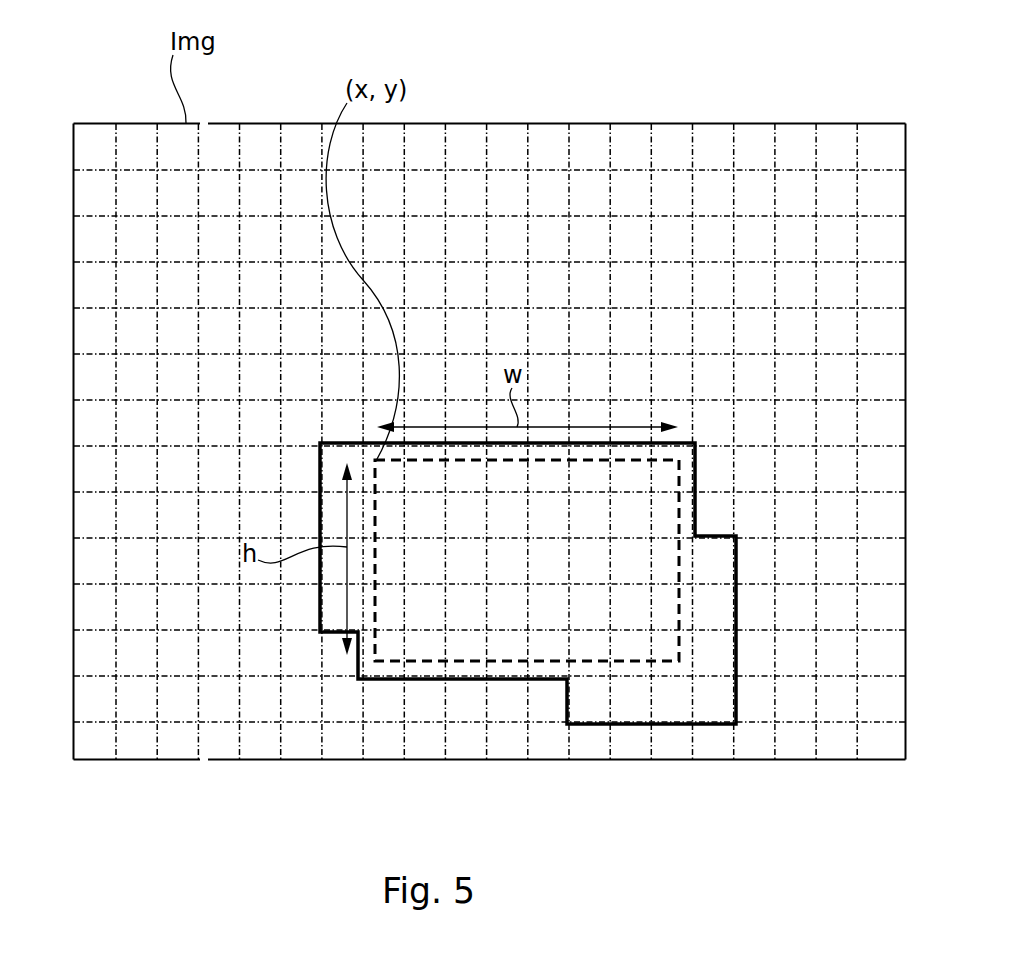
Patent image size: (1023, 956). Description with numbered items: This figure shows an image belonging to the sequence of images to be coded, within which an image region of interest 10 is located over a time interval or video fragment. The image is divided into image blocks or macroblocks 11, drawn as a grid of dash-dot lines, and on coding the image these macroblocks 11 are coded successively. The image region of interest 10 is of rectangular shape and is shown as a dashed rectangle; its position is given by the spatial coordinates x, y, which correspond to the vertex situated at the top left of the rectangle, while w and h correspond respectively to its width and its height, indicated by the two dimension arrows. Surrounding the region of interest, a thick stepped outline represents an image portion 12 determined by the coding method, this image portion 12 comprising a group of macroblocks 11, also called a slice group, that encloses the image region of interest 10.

The image region of interest 10 is at (483, 663).
The macroblocks 11 is at (883, 469).
The image portion 12 is at (673, 726).